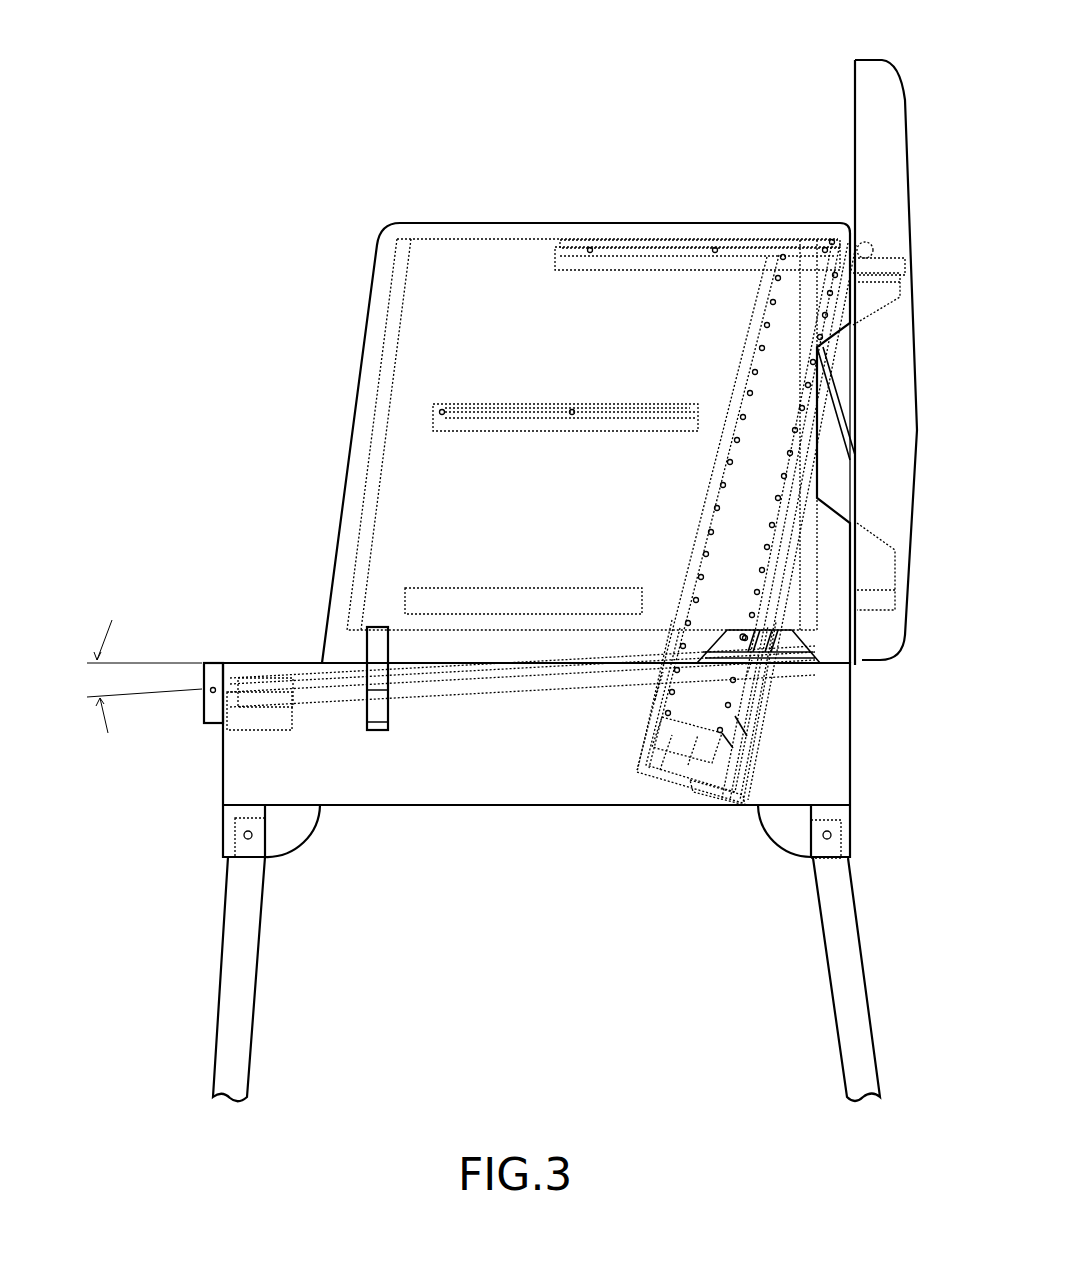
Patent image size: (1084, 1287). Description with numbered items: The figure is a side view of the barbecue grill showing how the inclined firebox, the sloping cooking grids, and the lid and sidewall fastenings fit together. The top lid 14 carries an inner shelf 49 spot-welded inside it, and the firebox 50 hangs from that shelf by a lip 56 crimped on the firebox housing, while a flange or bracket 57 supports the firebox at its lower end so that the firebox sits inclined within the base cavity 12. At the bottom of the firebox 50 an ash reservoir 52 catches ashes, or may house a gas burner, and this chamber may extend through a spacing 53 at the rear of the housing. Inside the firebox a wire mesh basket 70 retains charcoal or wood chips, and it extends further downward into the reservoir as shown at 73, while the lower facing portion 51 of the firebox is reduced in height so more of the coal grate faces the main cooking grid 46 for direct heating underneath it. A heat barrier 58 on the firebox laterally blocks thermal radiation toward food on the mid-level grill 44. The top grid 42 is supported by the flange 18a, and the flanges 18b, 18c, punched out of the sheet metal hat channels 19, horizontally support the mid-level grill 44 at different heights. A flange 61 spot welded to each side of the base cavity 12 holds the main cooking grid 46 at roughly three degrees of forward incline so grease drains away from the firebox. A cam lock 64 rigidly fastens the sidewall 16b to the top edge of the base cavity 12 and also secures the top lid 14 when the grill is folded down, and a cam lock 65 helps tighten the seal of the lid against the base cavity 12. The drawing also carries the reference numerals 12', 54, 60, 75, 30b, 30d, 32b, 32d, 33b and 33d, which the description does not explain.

The top lid 14 is at (872, 95).
The sidewall 16b is at (403, 225).
The hat channel 19 is at (473, 228).
The flange 18a is at (576, 240).
The flange 18b is at (472, 432).
The flange 18c is at (610, 588).
The top grid 42 is at (708, 238).
The mid-level grill 44 is at (480, 403).
The main cooking grid 46 is at (290, 670).
The inner shelf 49 is at (914, 248).
The lip 56 is at (872, 242).
The heat barrier 58 is at (738, 366).
The rail bracket 75 is at (692, 615).
The base cavity 12 is at (536, 763).
The inclined front portion of base 12' is at (174, 659).
The cam lock 65 is at (203, 722).
The flange 61 is at (298, 690).
The anchor plate 60 is at (248, 730).
The cam lock 64 is at (388, 728).
The firebox 50 is at (628, 762).
The facing portion 51 is at (653, 700).
The ash reservoir 52 is at (655, 778).
The spacing 53 is at (747, 686).
The latch lever 54 is at (750, 738).
The wire mesh basket 70 is at (736, 748).
The basket extension 73 is at (700, 765).
The bracket 57 is at (747, 784).
The left rear leg 30b is at (252, 1010).
The right rear leg 30d is at (830, 985).
The left gusset 32b is at (300, 822).
The right gusset 32d is at (788, 855).
The left fastener 33b is at (244, 835).
The right fastener 33d is at (832, 835).